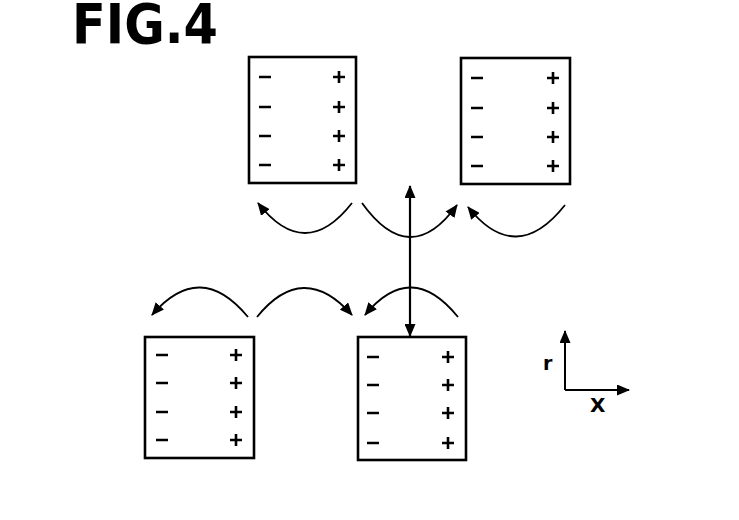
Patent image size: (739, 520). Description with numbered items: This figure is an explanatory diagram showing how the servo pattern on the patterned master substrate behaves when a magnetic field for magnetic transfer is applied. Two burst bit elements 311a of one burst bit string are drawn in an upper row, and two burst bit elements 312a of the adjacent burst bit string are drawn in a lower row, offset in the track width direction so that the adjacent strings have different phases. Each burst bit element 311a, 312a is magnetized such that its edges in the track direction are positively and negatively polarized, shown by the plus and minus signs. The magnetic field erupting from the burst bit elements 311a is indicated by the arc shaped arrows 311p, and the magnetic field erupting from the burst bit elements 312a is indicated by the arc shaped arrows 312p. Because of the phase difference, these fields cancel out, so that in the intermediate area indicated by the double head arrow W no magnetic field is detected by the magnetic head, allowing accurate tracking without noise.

The burst bit element 311a is at (295, 67).
The arc shaped arrows 311p is at (428, 232).
The burst bit element 312a is at (200, 448).
The arc shaped arrows 312p is at (452, 305).
The double head arrow W is at (410, 262).